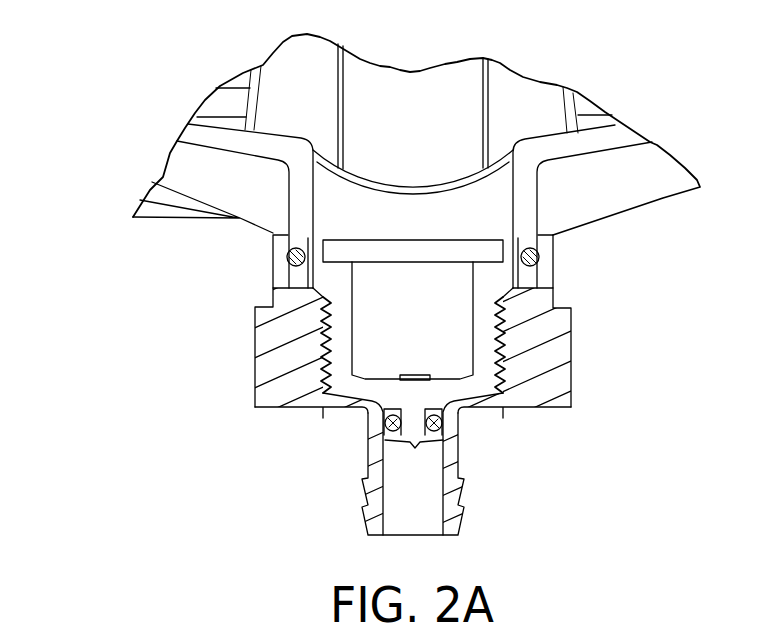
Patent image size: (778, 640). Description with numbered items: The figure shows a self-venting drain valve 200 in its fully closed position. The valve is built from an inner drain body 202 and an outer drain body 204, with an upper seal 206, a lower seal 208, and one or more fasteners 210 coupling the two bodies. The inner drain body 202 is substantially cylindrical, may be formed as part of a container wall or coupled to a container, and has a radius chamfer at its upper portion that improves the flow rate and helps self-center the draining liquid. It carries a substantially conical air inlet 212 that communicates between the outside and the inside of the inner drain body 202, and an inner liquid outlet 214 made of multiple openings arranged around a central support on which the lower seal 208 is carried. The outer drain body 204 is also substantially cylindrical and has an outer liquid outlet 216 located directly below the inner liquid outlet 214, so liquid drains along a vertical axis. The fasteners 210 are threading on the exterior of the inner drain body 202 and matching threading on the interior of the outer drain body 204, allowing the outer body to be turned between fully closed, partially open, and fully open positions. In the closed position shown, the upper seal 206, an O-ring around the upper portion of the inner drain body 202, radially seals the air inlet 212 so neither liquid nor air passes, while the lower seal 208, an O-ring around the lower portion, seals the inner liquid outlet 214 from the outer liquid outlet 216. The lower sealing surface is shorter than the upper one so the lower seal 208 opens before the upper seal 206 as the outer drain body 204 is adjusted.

The self-venting drain valve 200 is at (106, 56).
The inner drain body 202 is at (343, 326).
The outer drain body 204 is at (274, 343).
The upper seal 206 is at (284, 247).
The lower seal 208 is at (414, 445).
The fasteners 210 is at (323, 404).
The air inlet 212 is at (328, 240).
The inner liquid outlet 214 is at (427, 377).
The outer liquid outlet 216 is at (397, 516).